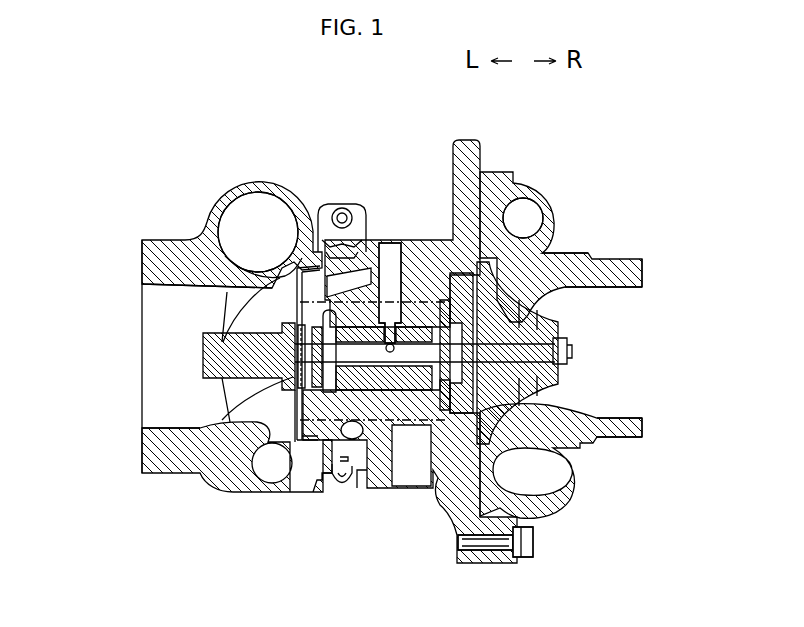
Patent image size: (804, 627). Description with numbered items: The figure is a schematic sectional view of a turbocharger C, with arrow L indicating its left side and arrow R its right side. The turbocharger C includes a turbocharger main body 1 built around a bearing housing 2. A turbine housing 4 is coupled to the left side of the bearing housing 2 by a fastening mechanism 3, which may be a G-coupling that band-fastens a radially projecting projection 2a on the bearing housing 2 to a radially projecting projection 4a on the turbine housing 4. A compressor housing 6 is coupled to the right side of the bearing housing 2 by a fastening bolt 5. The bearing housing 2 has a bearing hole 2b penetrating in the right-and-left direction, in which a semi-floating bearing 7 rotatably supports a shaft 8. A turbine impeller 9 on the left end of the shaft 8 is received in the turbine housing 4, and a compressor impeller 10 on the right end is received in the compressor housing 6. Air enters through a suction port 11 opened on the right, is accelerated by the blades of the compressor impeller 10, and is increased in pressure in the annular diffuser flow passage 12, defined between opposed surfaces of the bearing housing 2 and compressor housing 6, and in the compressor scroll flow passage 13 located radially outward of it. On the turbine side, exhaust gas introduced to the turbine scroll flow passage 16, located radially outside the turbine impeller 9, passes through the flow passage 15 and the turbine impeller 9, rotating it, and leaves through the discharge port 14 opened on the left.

The turbocharger main body 1 is at (142, 166).
The turbocharger C is at (74, 116).
The bearing housing 2 is at (471, 140).
The projection 2a is at (348, 485).
The bearing hole 2b is at (393, 370).
The fastening mechanism 3 is at (367, 236).
The turbine housing 4 is at (296, 224).
The projection 4a is at (337, 478).
The fastening bolt 5 is at (532, 548).
The compressor housing 6 is at (518, 188).
The semi-floating bearing 7 is at (418, 326).
The shaft 8 is at (388, 350).
The turbine impeller 9 is at (200, 450).
The compressor impeller 10 is at (555, 305).
The suction port 11 is at (637, 408).
The diffuser flow passage 12 is at (470, 212).
The compressor scroll flow passage 13 is at (530, 207).
The discharge port 14 is at (173, 265).
The flow passage 15 is at (273, 267).
The turbine scroll flow passage 16 is at (256, 202).